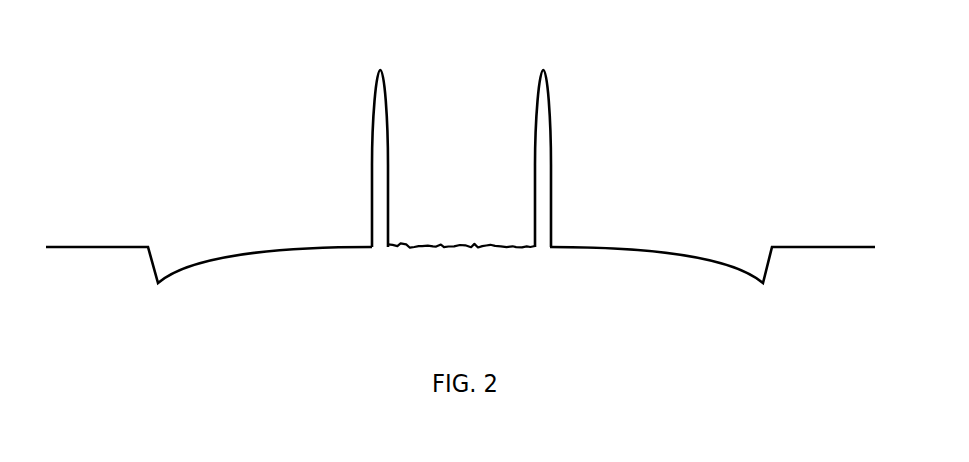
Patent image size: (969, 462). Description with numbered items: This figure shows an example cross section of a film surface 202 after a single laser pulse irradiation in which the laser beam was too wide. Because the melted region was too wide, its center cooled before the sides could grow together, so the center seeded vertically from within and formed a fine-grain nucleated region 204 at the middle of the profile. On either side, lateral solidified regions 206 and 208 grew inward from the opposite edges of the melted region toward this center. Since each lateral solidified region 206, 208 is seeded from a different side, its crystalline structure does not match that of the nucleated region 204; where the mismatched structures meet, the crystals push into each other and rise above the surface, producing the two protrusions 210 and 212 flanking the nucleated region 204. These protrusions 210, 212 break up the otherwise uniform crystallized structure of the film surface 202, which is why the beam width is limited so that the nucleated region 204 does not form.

The film surface 202 is at (736, 151).
The nucleated region 204 is at (423, 247).
The lateral solidified region 206 is at (283, 247).
The lateral solidified region 208 is at (697, 250).
The protrusion 210 is at (386, 96).
The protrusion 212 is at (549, 93).